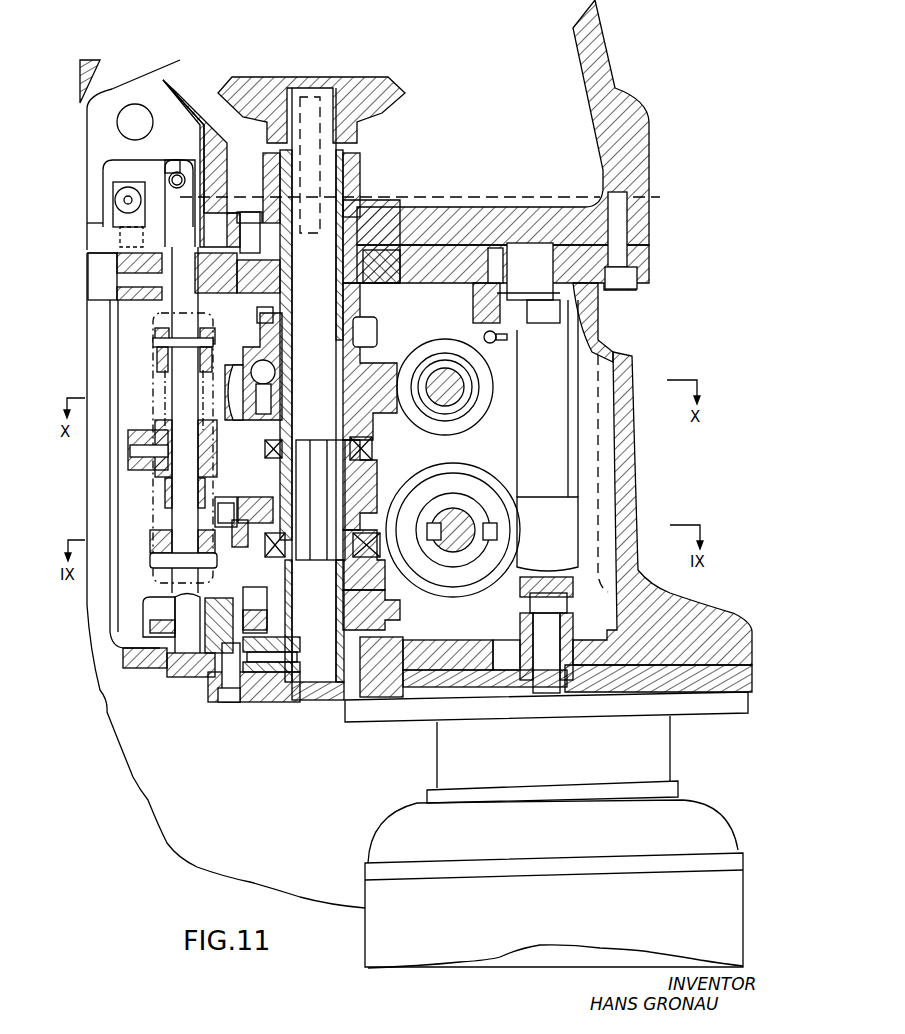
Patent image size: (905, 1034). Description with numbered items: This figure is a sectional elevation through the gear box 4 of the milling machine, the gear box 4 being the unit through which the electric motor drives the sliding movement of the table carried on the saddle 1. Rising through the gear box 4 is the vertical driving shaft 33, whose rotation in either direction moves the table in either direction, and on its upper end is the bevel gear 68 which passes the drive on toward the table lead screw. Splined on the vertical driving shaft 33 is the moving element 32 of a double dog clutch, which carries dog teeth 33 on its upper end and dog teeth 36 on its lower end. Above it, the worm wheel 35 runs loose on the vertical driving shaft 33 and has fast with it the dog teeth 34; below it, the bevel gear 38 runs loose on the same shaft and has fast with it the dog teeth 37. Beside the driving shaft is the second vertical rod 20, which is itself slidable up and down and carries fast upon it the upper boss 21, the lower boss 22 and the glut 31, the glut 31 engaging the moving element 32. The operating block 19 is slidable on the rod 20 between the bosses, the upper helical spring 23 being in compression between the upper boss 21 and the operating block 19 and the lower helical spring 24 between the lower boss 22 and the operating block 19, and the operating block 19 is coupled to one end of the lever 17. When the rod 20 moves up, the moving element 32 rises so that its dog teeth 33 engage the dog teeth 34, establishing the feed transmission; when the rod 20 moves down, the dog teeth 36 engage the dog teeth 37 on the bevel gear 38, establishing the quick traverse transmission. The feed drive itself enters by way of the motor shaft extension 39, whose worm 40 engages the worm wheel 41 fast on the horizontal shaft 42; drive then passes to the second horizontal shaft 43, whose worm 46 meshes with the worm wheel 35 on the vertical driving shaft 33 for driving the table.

The saddle 1 is at (641, 112).
The gear box 4 is at (96, 320).
The lever 17 is at (143, 462).
The operating block 19 is at (208, 440).
The second vertical rod 20 is at (180, 300).
The upper boss 21 is at (158, 360).
The lower boss 22 is at (155, 545).
The upper helical spring 23 is at (163, 379).
The lower helical spring 24 is at (165, 507).
The glut 31 is at (250, 500).
The moving element of double dog clutch 32 is at (367, 470).
The vertical driving shaft 33 is at (324, 330).
The dog teeth 34 is at (366, 437).
The worm wheel 35 is at (396, 362).
The dog teeth 36 is at (378, 516).
The dog teeth 37 is at (463, 645).
The bevel gear 38 is at (393, 617).
The motor shaft extension 39 is at (527, 444).
The worm 40 is at (556, 543).
The worm wheel 41 is at (477, 586).
The horizontal shaft 42 is at (455, 518).
The second horizontal shaft 43 is at (438, 378).
The worm 46 is at (456, 350).
The bevel gear 68 is at (378, 112).